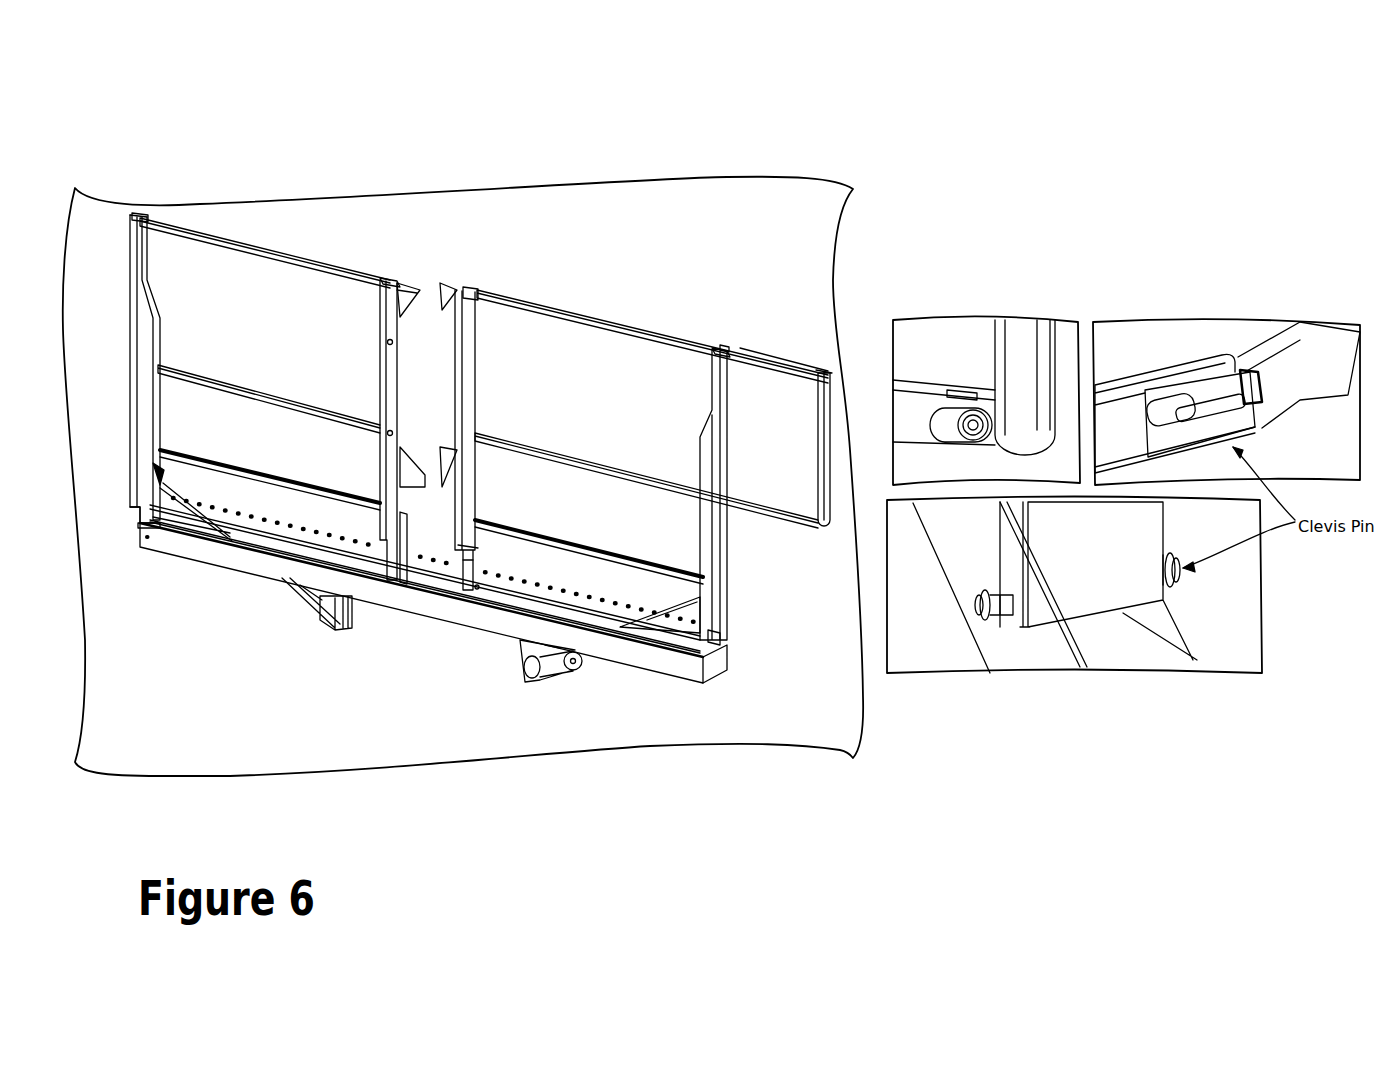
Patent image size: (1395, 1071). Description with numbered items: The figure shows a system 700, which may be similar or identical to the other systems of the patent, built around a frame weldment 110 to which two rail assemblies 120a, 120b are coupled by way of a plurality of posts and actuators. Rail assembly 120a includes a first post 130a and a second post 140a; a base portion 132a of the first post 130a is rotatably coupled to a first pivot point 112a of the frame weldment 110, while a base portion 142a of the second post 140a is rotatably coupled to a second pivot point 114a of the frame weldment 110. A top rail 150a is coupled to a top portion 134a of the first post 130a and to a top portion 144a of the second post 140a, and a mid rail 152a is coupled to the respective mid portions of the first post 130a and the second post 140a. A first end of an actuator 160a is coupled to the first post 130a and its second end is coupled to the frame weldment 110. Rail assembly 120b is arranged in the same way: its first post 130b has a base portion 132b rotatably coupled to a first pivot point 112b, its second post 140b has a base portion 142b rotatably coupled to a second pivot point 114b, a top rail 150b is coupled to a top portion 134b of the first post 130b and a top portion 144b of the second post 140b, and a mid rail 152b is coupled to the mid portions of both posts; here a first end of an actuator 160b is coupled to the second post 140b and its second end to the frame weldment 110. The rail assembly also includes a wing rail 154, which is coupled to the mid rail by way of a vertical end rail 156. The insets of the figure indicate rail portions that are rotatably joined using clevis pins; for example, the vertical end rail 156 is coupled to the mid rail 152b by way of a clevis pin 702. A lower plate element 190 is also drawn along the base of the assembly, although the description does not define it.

The system 700 is at (1280, 88).
The frame weldment 110 is at (427, 620).
The first pivot point 112a is at (170, 522).
The first pivot point 112b is at (477, 587).
The second pivot point 114a is at (390, 573).
The second pivot point 114b is at (732, 640).
The rail assembly 120a is at (367, 252).
The rail assembly 120b is at (572, 260).
The first post 130a is at (160, 325).
The first post 130b is at (480, 382).
The base portion 132a is at (132, 505).
The base portion 132b is at (473, 570).
The top portion 134a is at (140, 215).
The top portion 134b is at (475, 289).
The second post 140a is at (380, 367).
The second post 140b is at (702, 435).
The base portion 142a is at (380, 530).
The base portion 142b is at (700, 633).
The top portion 144a is at (390, 277).
The top portion 144b is at (723, 345).
The top rail 150a is at (253, 242).
The top rail 150b is at (573, 310).
The mid rail 152a is at (207, 375).
The mid rail 152b is at (522, 442).
The wing rail 154 is at (812, 367).
The vertical end rail 156 is at (817, 462).
The actuator 160a is at (307, 605).
The actuator 160b is at (550, 680).
The kick plate 190 is at (348, 485).
The clevis pin 702 is at (817, 540).